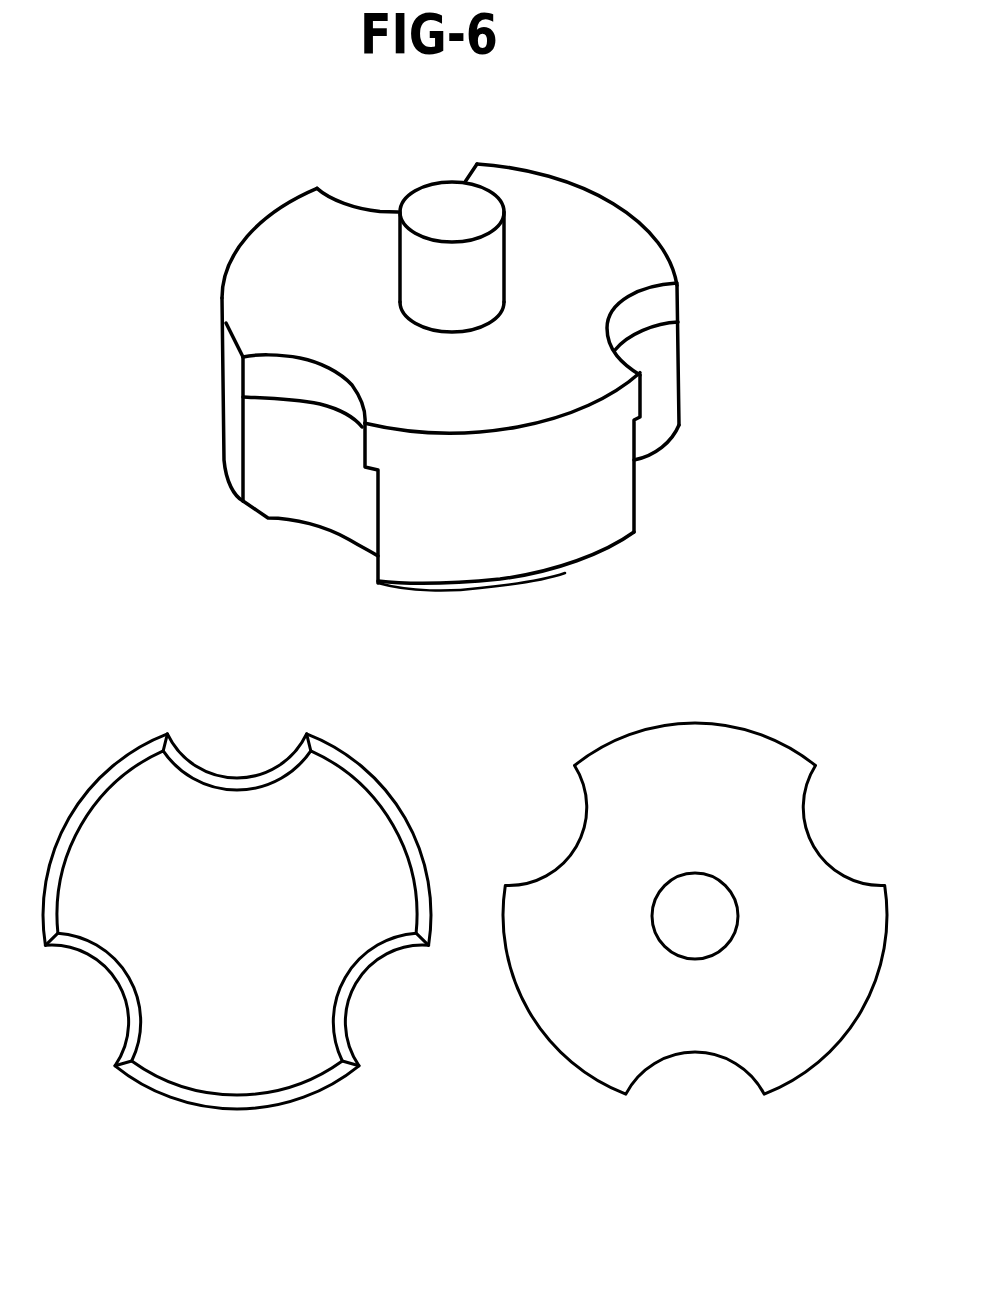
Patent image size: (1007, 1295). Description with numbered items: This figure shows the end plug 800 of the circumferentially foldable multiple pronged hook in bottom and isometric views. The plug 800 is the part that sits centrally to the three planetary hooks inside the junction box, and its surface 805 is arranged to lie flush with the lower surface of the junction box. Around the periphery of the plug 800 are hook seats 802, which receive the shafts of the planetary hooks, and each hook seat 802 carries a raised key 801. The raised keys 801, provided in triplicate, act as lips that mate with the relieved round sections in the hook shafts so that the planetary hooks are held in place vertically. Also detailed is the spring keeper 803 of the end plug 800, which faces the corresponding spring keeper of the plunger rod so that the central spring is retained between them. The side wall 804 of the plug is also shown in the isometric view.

The end plug 800 is at (646, 869).
The raised key 801 is at (313, 378).
The hook seat 802 is at (317, 463).
The spring keeper 803 is at (397, 250).
The side wall 804 is at (578, 477).
The surface 805 is at (224, 853).